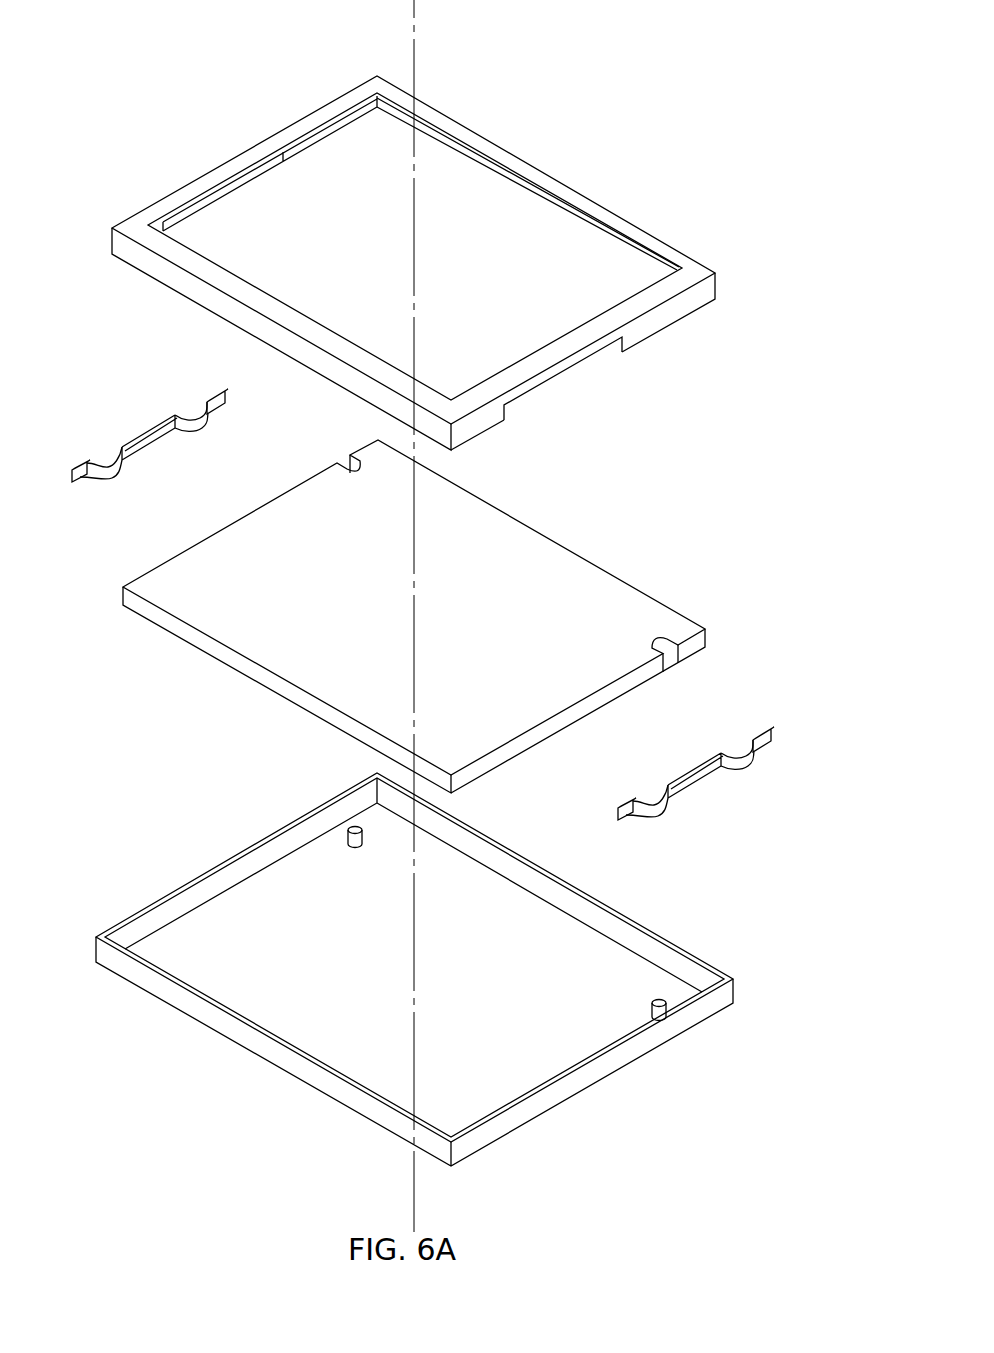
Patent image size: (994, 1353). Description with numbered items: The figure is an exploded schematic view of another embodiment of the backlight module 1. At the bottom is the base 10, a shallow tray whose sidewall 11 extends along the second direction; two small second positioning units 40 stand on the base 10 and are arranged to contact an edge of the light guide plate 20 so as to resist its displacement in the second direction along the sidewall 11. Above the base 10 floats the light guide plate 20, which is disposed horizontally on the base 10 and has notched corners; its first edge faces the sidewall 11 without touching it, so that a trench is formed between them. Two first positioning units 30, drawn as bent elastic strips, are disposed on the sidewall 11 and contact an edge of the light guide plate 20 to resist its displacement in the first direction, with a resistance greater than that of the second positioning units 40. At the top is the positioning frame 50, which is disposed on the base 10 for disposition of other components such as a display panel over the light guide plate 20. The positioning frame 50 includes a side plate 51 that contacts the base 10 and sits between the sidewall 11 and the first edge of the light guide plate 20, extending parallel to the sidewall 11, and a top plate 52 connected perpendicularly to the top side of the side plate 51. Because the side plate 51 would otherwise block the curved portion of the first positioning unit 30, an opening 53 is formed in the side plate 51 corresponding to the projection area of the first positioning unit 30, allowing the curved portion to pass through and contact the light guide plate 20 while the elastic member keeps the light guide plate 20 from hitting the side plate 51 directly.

The backlight module 1 is at (98, 80).
The base 10 is at (244, 836).
The sidewall 11 is at (193, 880).
The light guide plate 20 is at (658, 587).
The first positioning unit 30 is at (710, 783).
The second positioning unit 40 is at (352, 826).
The positioning frame 50 is at (692, 242).
The side plate 51 is at (666, 315).
The top plate 52 is at (602, 213).
The opening 53 is at (607, 348).